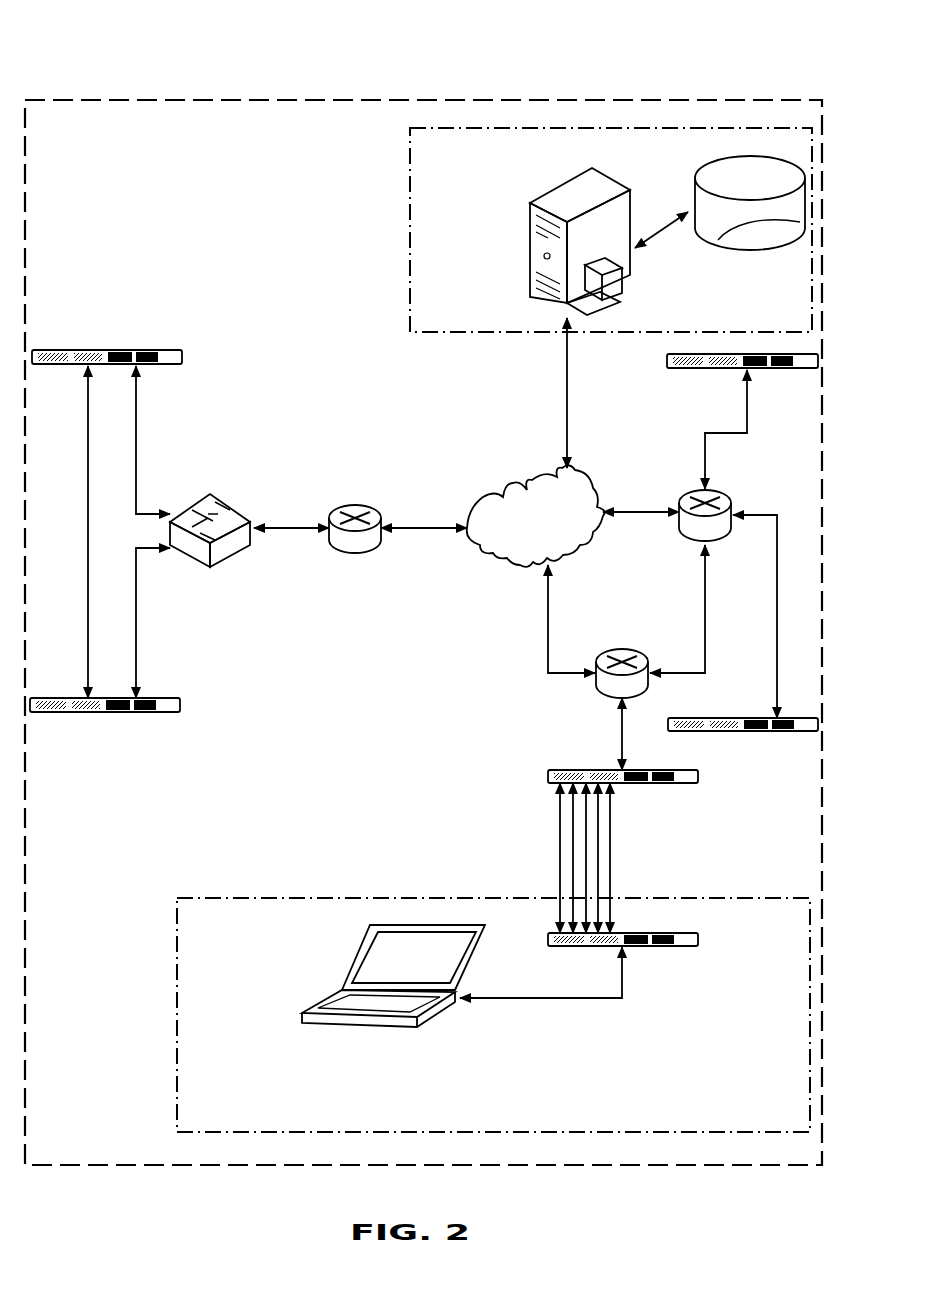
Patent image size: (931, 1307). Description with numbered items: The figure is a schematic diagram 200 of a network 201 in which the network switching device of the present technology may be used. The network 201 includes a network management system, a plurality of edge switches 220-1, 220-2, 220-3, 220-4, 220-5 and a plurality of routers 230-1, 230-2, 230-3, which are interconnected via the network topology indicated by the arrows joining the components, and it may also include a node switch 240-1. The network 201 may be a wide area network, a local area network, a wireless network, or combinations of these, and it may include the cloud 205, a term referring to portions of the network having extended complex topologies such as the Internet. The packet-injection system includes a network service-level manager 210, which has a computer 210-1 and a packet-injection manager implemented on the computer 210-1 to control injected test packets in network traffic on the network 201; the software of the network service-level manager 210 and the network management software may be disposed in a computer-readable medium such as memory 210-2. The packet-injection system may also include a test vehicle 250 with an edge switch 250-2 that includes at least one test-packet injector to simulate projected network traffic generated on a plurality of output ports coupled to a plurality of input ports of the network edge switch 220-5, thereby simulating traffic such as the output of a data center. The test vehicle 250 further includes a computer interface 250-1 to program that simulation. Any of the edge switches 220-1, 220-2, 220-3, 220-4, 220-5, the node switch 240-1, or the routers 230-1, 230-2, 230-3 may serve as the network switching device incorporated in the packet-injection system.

The schematic diagram 200 is at (176, 88).
The network 201 is at (160, 133).
The cloud 205 is at (522, 510).
The network service-level manager 210 is at (472, 168).
The computer 210-1 is at (532, 215).
The memory 210-2 is at (770, 217).
The edge switch 220-1 is at (183, 355).
The edge switch 220-2 is at (180, 707).
The edge switch 220-3 is at (767, 370).
The edge switch 220-4 is at (793, 732).
The network edge switch 220-5 is at (687, 780).
The router 230-1 is at (382, 538).
The router 230-2 is at (600, 682).
The router 230-3 is at (705, 525).
The node switch 240-1 is at (233, 543).
The test vehicle 250 is at (237, 930).
The computer interface 250-1 is at (302, 1017).
The edge switch 250-2 is at (690, 947).